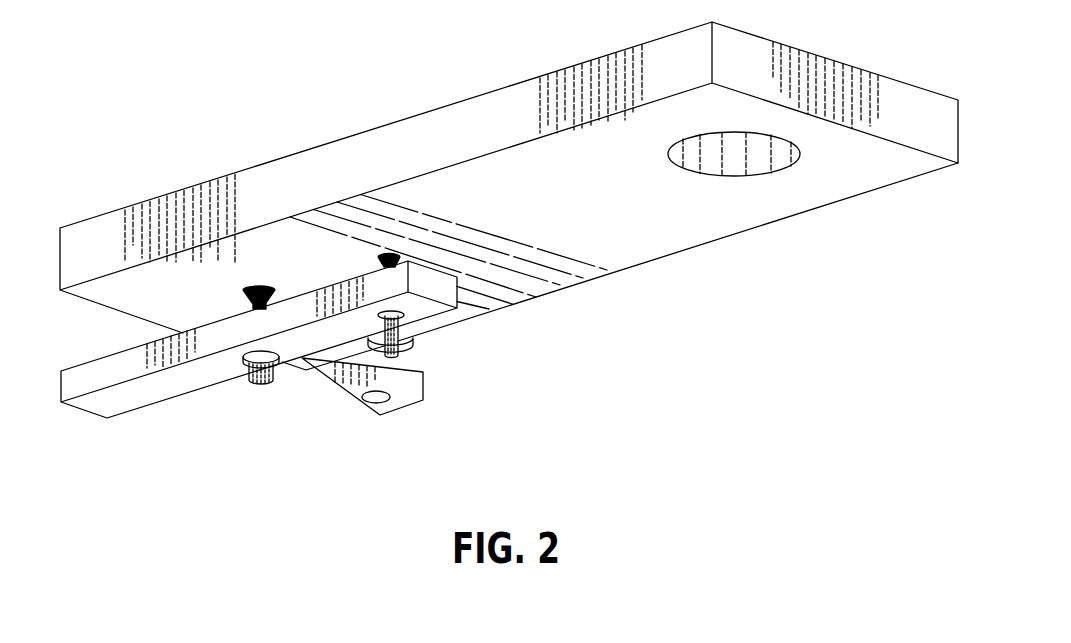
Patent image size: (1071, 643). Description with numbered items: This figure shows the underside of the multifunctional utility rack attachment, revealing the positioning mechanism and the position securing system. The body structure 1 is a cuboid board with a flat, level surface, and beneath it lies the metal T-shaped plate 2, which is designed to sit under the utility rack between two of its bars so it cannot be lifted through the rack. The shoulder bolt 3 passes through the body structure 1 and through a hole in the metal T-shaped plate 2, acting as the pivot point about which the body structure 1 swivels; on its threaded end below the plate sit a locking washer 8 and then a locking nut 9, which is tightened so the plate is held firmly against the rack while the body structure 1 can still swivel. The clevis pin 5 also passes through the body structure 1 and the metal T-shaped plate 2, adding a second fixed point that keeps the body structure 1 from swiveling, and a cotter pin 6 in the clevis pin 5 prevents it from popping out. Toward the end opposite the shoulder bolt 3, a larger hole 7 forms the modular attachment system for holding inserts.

The body structure 1 is at (640, 222).
The metal T-shaped plate 2 is at (127, 396).
The shoulder bolt 3 is at (245, 295).
The clevis pin 5 is at (402, 342).
The cotter pin 6 is at (450, 322).
The hole 7 is at (761, 157).
The locking washer 8 is at (272, 356).
The locking nut 9 is at (243, 375).